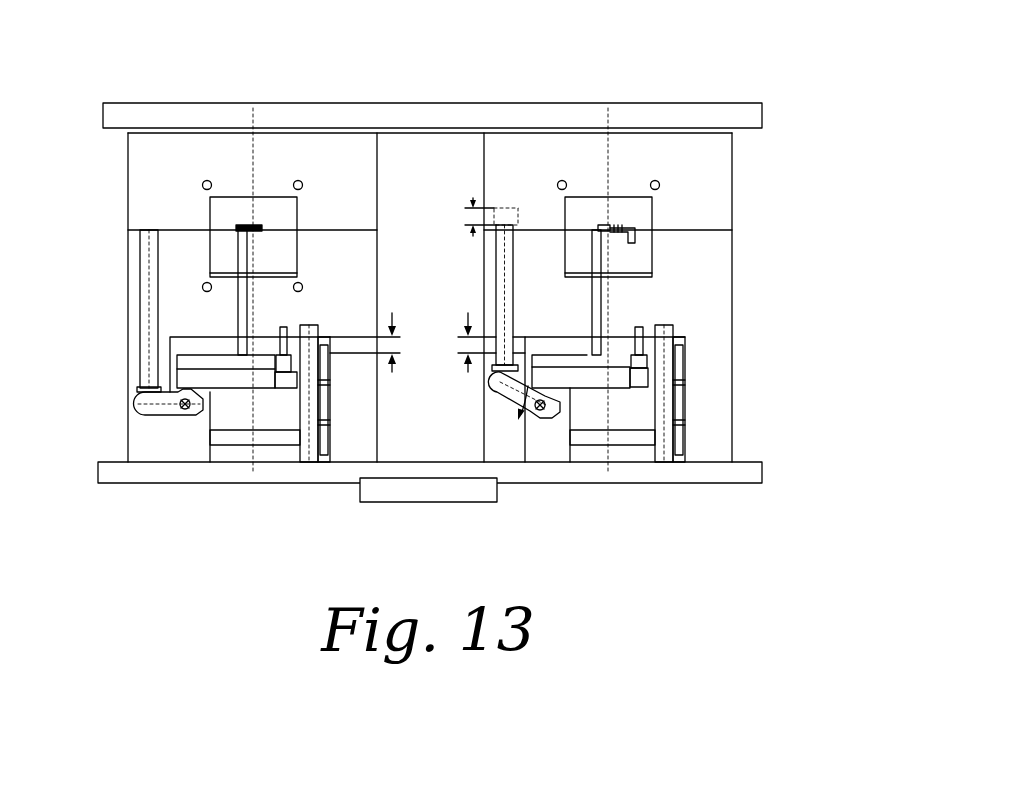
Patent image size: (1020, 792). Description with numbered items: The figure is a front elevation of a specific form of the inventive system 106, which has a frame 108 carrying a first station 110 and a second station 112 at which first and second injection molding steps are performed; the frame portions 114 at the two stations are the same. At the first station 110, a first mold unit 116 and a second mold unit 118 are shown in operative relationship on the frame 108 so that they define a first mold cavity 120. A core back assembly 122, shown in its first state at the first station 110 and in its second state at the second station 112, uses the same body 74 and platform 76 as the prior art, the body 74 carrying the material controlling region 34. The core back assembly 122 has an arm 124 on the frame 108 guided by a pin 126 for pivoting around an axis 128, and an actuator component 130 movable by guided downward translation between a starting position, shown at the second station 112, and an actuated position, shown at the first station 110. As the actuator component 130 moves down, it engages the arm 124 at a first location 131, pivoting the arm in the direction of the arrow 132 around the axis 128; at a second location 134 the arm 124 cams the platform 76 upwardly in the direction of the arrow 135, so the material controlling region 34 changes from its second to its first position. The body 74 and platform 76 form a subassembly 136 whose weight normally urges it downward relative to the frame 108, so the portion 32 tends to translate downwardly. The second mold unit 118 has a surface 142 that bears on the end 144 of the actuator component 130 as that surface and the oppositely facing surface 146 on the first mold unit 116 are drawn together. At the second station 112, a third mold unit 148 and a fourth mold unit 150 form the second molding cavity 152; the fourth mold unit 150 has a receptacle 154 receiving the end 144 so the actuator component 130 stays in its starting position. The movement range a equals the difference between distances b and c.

The system 106 is at (567, 88).
The frame 108 is at (434, 480).
The first station 110 is at (112, 308).
The second station 112 is at (427, 331).
The frame portions 114 is at (235, 450).
The first mold unit 116 is at (428, 332).
The second mold unit 118 is at (358, 190).
The first mold cavity 120 is at (255, 232).
The core back assembly 122 is at (165, 416).
The arm 124 is at (148, 408).
The pin 126 is at (182, 392).
The axis 128 is at (205, 394).
The actuator component 130 is at (143, 270).
The first location 131 is at (512, 358).
The arrow 132 is at (507, 396).
The second location 134 is at (561, 382).
The arrow 135 is at (538, 216).
The subassembly 136 is at (613, 381).
The surface 142 is at (128, 243).
The end 144 is at (143, 230).
The surface 146 is at (175, 230).
The third mold unit 148 is at (723, 305).
The fourth mold unit 150 is at (722, 187).
The second molding cavity 152 is at (635, 243).
The receptacle 154 is at (498, 222).
The portion 32 is at (237, 283).
The material controlling region 34 is at (243, 226).
The body 74 is at (247, 307).
The platform 76 is at (203, 360).